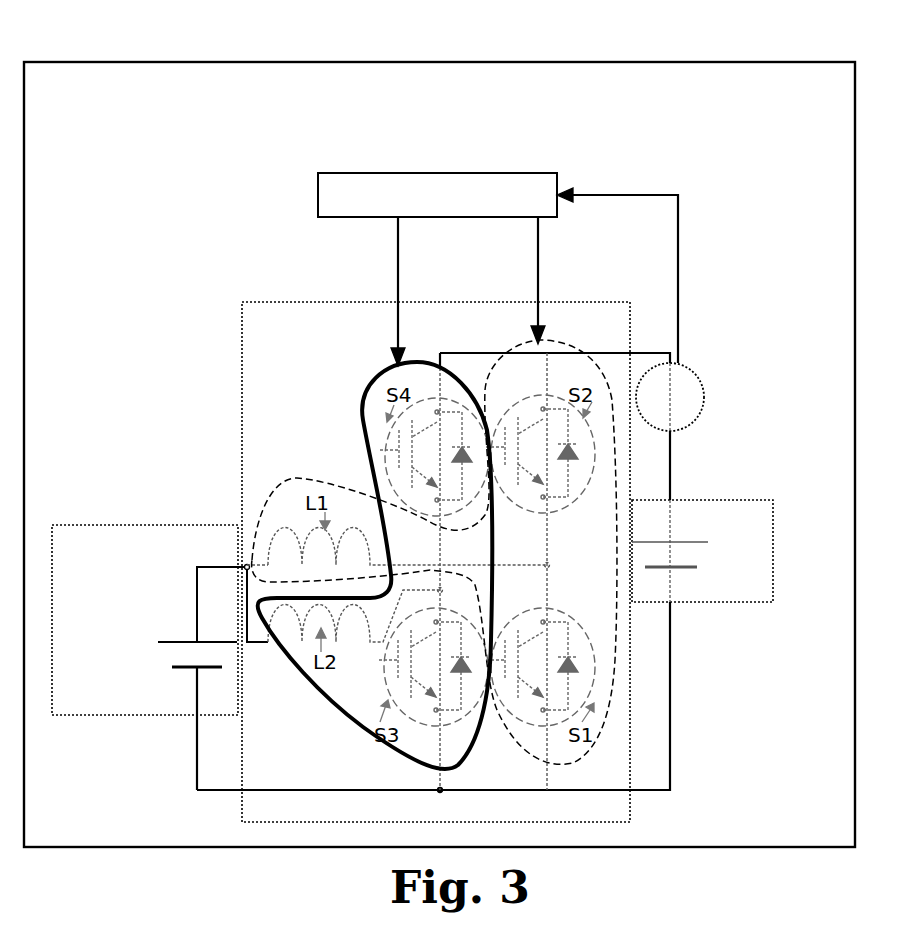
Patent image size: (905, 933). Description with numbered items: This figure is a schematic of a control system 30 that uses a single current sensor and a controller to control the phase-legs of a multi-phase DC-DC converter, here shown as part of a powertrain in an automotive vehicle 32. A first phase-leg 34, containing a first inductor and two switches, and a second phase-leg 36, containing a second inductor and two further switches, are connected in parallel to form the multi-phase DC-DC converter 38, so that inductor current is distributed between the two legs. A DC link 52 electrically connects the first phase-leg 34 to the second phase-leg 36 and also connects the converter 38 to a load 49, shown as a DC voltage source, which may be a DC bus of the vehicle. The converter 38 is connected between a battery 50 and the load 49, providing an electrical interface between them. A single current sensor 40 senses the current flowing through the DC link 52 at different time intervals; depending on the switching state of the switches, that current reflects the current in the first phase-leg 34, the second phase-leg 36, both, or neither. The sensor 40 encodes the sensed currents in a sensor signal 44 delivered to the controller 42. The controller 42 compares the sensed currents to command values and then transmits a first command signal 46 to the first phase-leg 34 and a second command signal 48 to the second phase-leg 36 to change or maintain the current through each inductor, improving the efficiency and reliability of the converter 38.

The control system 30 is at (760, 121).
The automotive vehicle 32 is at (592, 62).
The first phase-leg 34 is at (535, 345).
The second phase-leg 36 is at (385, 373).
The multi-phase DC-DC converter 38 is at (262, 297).
The single current sensor 40 is at (700, 378).
The controller 42 is at (465, 173).
The sensor signal 44 is at (667, 195).
The first command signal 46 is at (538, 285).
The second command signal 48 is at (398, 285).
The load 49 is at (773, 500).
The battery 50 is at (87, 525).
The DC link 52 is at (686, 442).